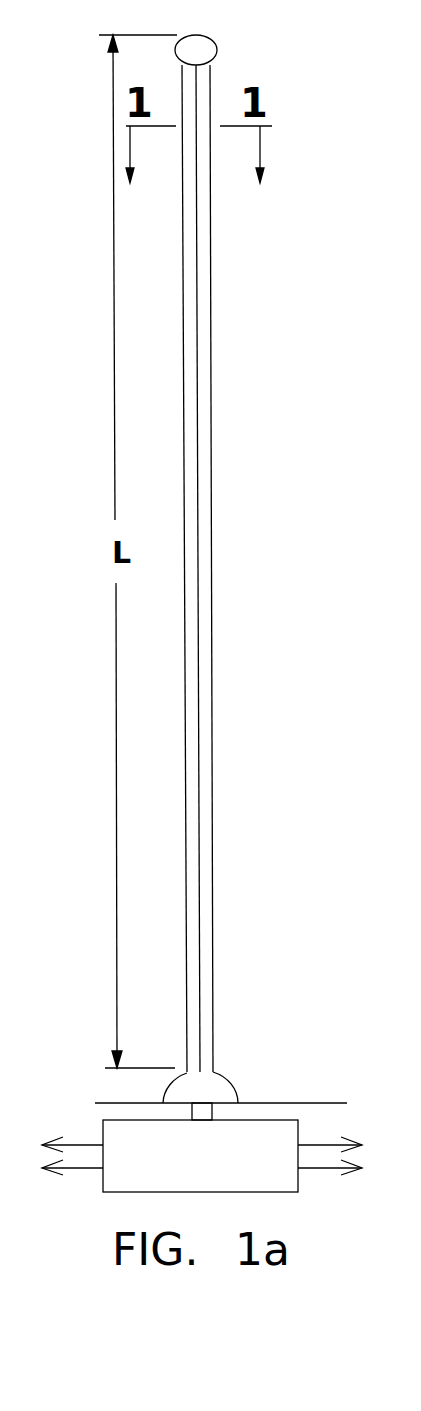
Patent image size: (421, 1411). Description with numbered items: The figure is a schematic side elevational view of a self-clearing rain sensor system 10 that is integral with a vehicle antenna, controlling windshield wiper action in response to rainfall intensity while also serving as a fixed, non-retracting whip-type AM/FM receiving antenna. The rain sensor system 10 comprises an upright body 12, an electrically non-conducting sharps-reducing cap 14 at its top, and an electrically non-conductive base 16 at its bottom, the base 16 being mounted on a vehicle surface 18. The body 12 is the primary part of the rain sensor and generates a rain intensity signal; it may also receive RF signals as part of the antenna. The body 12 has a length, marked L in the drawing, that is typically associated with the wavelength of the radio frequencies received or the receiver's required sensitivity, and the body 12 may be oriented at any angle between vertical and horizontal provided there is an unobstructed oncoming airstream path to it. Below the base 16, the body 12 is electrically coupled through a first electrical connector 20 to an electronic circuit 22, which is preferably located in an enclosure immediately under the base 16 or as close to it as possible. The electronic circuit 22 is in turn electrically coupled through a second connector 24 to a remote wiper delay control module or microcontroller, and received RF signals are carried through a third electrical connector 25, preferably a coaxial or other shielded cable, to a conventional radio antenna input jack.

The self-clearing rain sensor system 10 is at (244, 368).
The body 12 is at (213, 567).
The electrically non-conducting sharps-reducing cap 14 is at (195, 50).
The electrically non-conductive base 16 is at (222, 1088).
The vehicle surface 18 is at (300, 1102).
The first electrical connector 20 is at (192, 1113).
The electronic circuit 22 is at (220, 1192).
The second connector 24 is at (78, 1145).
The third electrical connector 25 is at (320, 1143).